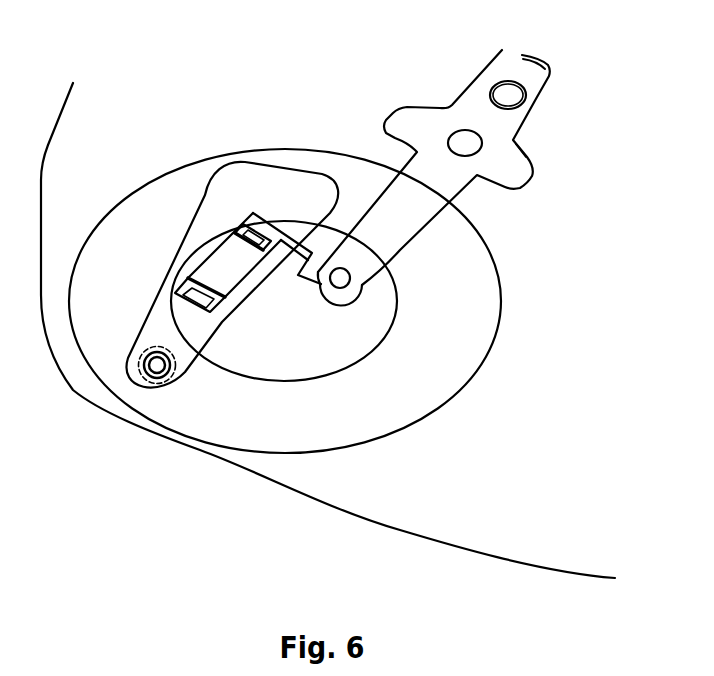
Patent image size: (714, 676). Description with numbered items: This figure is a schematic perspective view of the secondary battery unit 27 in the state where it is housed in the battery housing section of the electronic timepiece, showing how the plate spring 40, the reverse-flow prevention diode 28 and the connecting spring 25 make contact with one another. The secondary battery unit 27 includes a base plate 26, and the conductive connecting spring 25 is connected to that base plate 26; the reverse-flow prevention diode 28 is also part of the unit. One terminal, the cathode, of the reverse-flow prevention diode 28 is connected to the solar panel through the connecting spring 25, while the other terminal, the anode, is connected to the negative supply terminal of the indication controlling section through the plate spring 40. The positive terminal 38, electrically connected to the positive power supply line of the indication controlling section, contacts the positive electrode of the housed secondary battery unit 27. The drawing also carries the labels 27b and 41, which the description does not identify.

The connecting spring 25 is at (157, 367).
The base plate 26 is at (232, 175).
The secondary battery unit 27 is at (415, 405).
The disk hub portion 27b is at (310, 282).
The reverse-flow prevention diode 28 is at (217, 262).
The positive terminal 38 is at (353, 512).
The plate spring 40 is at (430, 221).
The pivot 41 is at (341, 280).